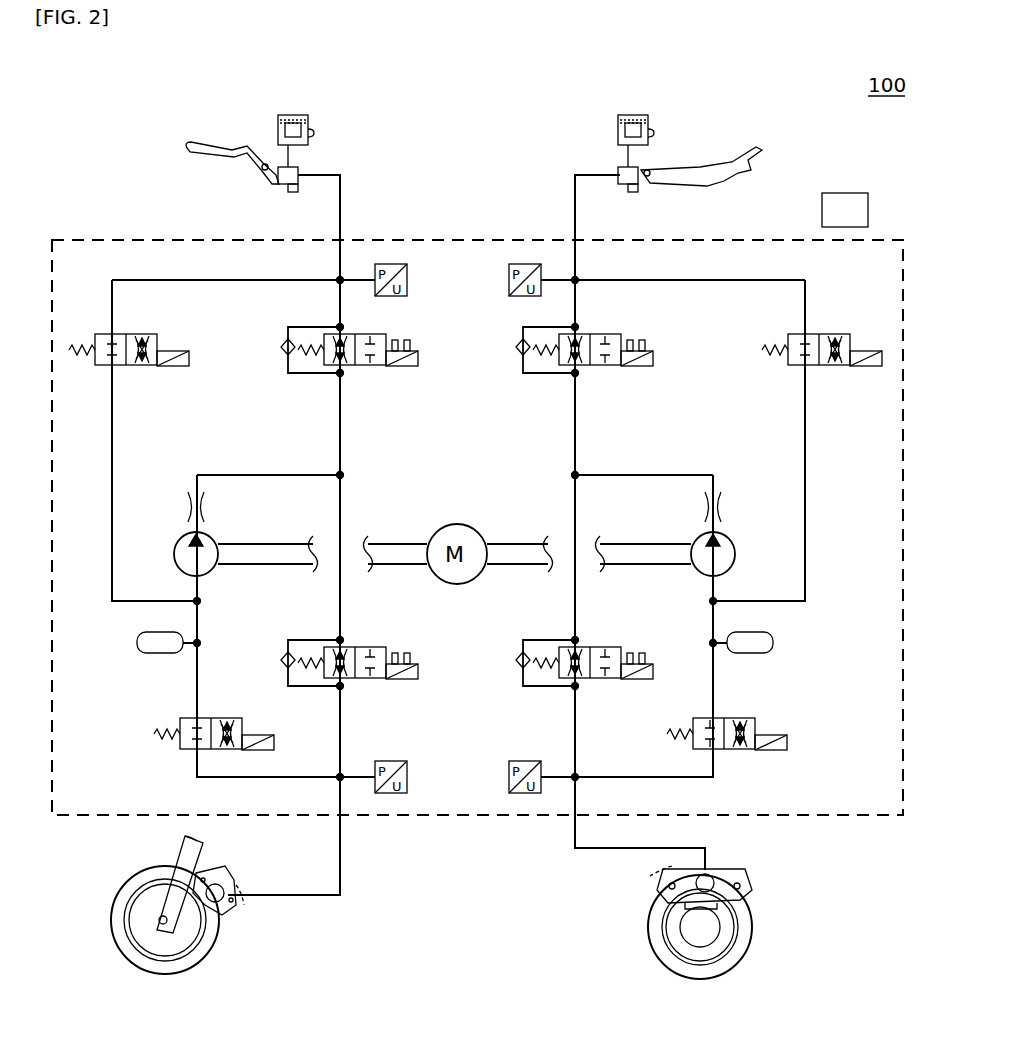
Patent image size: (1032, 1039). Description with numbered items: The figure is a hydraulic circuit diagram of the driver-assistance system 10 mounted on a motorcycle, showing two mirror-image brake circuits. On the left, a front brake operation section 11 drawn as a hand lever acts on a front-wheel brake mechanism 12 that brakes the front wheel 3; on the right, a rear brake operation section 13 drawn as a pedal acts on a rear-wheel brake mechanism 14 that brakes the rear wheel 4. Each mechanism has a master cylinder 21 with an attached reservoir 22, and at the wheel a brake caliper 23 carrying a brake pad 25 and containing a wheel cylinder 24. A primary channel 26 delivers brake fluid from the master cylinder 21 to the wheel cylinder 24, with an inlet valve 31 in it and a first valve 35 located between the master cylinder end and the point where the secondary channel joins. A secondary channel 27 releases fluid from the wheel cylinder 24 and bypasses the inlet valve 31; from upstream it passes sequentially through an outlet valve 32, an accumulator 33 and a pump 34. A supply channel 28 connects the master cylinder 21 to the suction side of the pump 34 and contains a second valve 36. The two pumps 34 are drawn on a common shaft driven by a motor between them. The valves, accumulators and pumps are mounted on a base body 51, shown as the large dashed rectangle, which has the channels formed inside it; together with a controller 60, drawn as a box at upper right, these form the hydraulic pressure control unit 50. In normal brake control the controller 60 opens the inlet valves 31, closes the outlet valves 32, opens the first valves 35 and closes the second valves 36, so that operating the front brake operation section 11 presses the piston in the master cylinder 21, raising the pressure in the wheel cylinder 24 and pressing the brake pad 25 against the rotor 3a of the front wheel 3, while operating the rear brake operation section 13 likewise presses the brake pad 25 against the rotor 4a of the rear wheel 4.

The driver-assistance system 10 is at (103, 143).
The front brake operation section 11 is at (205, 144).
The front-wheel brake mechanism 12 is at (364, 153).
The rear brake operation section 13 is at (733, 158).
The rear-wheel brake mechanism 14 is at (558, 155).
The master cylinder 21 is at (288, 186).
The reservoir 22 is at (300, 115).
The brake caliper 23 is at (238, 880).
The wheel cylinder 24 is at (225, 922).
The brake pad 25 is at (244, 918).
The primary channel 26 is at (343, 414).
The secondary channel 27 is at (294, 776).
The supply channel 28 is at (225, 282).
The inlet valve 31 is at (376, 680).
The outlet valve 32 is at (233, 716).
The accumulator 33 is at (137, 641).
The pump 34 is at (206, 576).
The first valve 35 is at (400, 366).
The second valve 36 is at (160, 366).
The hydraulic pressure control unit 50 is at (806, 177).
The base body 51 is at (80, 238).
The controller 60 is at (852, 190).
The front wheel 3 is at (112, 878).
The rotor 3a is at (190, 955).
The rear wheel 4 is at (750, 955).
The rotor 4a is at (662, 942).